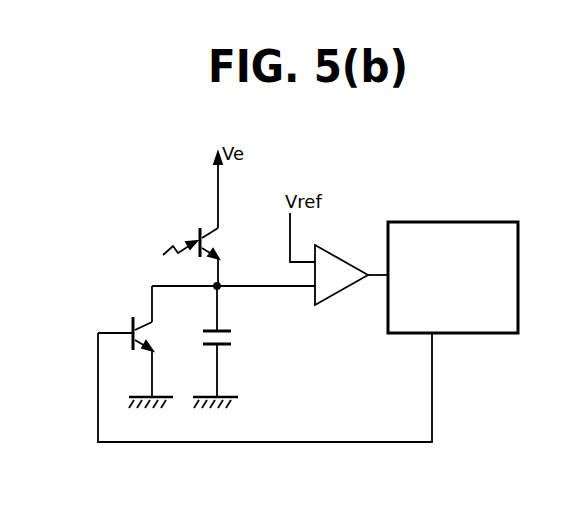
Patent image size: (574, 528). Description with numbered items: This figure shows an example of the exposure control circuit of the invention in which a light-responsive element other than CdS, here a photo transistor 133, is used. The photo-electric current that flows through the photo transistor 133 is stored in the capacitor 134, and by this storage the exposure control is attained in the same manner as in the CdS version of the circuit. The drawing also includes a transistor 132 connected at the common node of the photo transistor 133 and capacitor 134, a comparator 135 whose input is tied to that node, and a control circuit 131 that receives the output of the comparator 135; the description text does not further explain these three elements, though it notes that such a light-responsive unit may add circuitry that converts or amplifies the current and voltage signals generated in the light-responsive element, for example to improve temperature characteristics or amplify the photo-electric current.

The control circuit 131 is at (452, 222).
The transistor 132 is at (130, 322).
The photo transistor 133 is at (198, 235).
The capacitor 134 is at (233, 337).
The comparator 135 is at (342, 294).